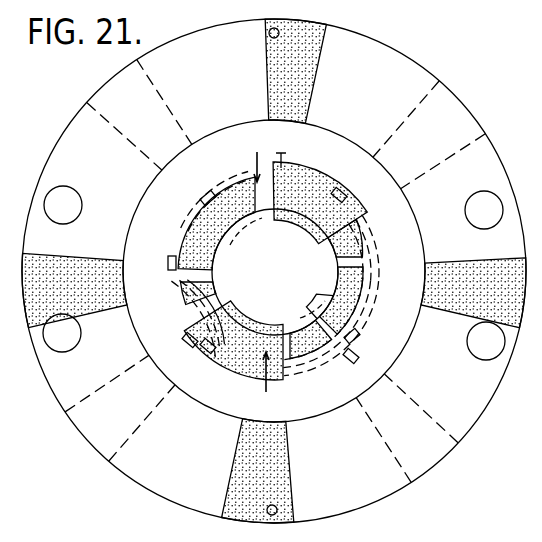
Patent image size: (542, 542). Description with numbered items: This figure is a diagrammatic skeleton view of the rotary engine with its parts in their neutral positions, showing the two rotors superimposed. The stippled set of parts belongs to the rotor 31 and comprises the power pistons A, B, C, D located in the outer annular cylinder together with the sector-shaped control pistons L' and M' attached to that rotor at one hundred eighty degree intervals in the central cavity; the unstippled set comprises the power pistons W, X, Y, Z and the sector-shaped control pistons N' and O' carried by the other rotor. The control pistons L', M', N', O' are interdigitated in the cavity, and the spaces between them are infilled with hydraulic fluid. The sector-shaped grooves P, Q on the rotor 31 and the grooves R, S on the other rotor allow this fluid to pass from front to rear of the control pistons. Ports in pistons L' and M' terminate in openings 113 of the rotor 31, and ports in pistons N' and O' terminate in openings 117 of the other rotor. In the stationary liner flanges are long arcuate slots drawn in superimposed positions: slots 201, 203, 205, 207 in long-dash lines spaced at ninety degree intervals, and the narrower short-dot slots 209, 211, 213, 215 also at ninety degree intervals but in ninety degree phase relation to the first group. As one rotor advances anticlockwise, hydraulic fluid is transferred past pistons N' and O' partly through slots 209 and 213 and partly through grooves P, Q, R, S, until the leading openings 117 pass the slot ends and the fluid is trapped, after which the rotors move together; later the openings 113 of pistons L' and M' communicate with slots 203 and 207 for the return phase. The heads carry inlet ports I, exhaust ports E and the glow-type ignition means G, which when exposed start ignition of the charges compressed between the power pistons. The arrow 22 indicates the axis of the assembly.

The rotor shaft axis arrow 22 is at (253, 275).
The rotor 31 is at (245, 122).
The openings 113 is at (306, 180).
The openings 117 is at (187, 223).
The long arcuate slot 201 is at (376, 229).
The long arcuate slot 203 is at (317, 376).
The long arcuate slot 205 is at (177, 314).
The long arcuate slot 207 is at (233, 173).
The long arcuate slot 209 is at (351, 361).
The long arcuate slot 211 is at (184, 341).
The long arcuate slot 213 is at (168, 263).
The long arcuate slot 215 is at (284, 152).
The power piston A is at (266, 61).
The power piston B is at (75, 285).
The power piston C is at (289, 468).
The power piston D is at (479, 262).
The exhaust port E is at (65, 186).
The ignition means G is at (268, 33).
The inlet port I is at (484, 191).
The power piston W is at (151, 78).
The power piston X is at (145, 419).
The power piston Y is at (430, 411).
The power piston Z is at (418, 113).
The sector-shaped control piston L' is at (320, 208).
The sector-shaped control piston M' is at (233, 339).
The sector-shaped control piston N' is at (220, 223).
The sector-shaped control piston O' is at (330, 300).
The sector-shaped slot P is at (200, 279).
The sector-shaped slot Q is at (340, 266).
The sector-shaped slot R is at (324, 248).
The sector-shaped slot S is at (307, 342).